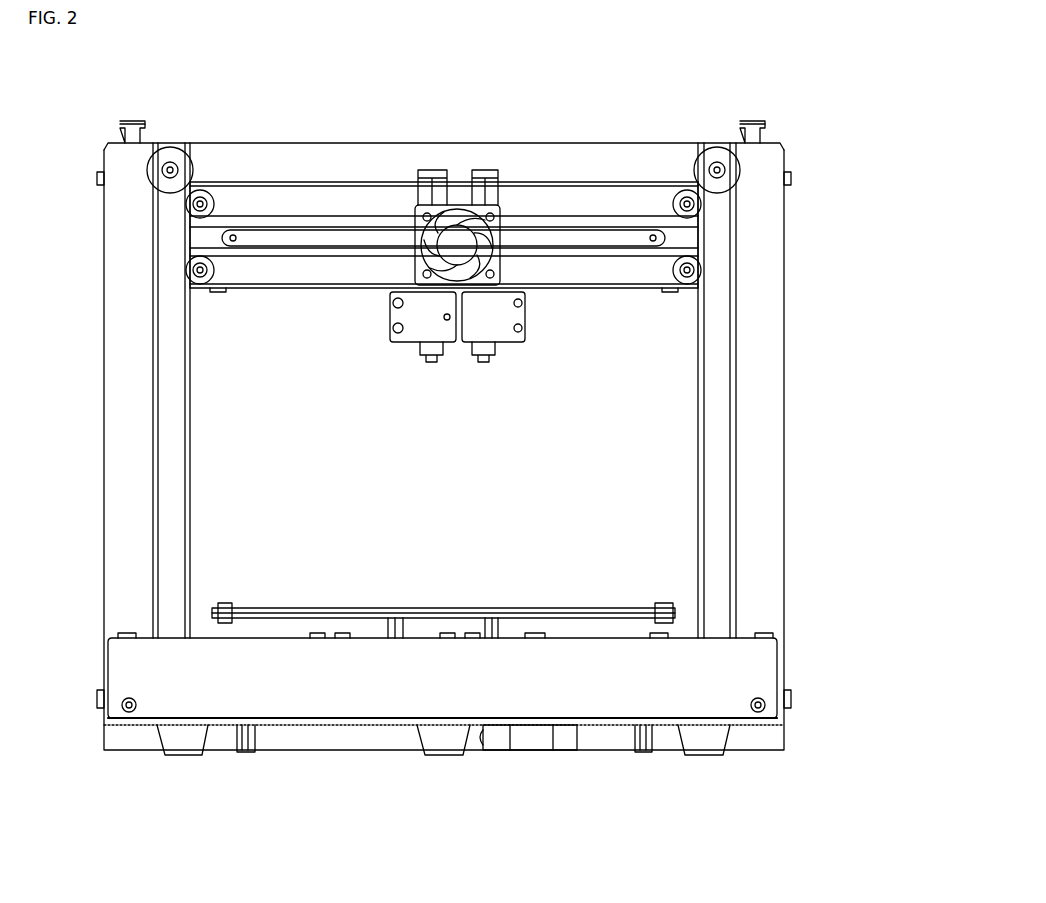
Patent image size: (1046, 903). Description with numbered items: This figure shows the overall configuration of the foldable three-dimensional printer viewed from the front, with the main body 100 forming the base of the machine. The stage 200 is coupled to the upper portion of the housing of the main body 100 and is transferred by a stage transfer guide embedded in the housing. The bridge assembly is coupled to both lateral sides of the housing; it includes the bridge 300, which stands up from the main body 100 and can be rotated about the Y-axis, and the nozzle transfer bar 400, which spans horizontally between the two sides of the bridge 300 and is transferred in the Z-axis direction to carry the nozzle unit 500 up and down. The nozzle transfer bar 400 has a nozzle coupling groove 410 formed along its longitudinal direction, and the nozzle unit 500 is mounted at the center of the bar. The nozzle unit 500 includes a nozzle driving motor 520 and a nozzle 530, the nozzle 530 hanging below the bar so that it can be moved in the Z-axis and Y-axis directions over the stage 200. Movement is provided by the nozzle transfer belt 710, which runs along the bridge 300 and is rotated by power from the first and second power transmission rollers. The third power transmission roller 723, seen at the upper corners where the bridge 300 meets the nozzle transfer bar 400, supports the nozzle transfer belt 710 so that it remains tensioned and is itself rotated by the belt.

The main body 100 is at (612, 685).
The stage 200 is at (372, 608).
The bridge 300 is at (758, 347).
The nozzle transfer bar 400 is at (285, 200).
The nozzle coupling groove 410 is at (350, 228).
The nozzle unit 500 is at (524, 231).
The nozzle driving motor 520 is at (460, 243).
The nozzle 530 is at (497, 318).
The nozzle transfer belt 710 is at (736, 398).
The third power transmission roller 723 is at (195, 265).